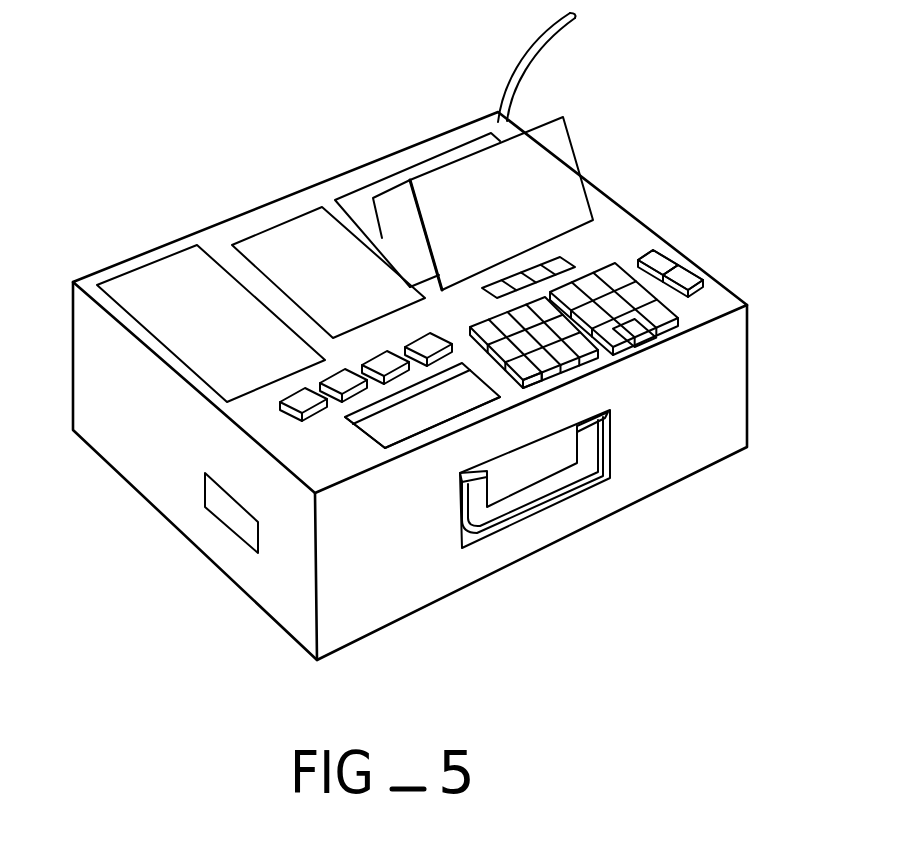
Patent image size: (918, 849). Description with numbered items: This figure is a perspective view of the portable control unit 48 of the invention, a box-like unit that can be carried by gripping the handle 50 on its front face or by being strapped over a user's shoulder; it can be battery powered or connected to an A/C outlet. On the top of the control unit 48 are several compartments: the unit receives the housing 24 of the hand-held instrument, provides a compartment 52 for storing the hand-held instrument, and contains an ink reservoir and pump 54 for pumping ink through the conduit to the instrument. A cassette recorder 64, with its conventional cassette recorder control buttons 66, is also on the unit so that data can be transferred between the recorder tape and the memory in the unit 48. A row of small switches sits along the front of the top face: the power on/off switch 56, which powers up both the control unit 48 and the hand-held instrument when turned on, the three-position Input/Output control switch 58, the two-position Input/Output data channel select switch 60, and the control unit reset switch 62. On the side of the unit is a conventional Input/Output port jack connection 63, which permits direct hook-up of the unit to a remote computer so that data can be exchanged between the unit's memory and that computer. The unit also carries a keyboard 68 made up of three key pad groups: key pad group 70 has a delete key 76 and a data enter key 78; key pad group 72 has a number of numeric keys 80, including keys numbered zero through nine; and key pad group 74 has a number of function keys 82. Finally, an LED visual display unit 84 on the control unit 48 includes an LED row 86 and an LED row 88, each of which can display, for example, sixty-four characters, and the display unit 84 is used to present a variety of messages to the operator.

The housing 24 is at (518, 58).
The portable control unit 48 is at (146, 552).
The handle 50 is at (547, 495).
The compartment 52 is at (178, 295).
The ink reservoir and pump 54 is at (300, 243).
The power on/off switch 56 is at (310, 417).
The Input/Output control switch 58 is at (342, 403).
The Input/Output data channel select switch 60 is at (383, 357).
The control unit reset switch 62 is at (425, 340).
The Input/Output port jack connection 63 is at (259, 538).
The cassette recorder 64 is at (551, 152).
The cassette recorder control buttons 66 is at (586, 245).
The keyboard 68 is at (707, 308).
The key pad group 70 is at (695, 252).
The key pad group 72 is at (655, 342).
The key pad group 74 is at (568, 375).
The delete key 76 is at (657, 260).
The data enter key 78 is at (688, 285).
The numeric keys 80 is at (636, 324).
The function keys 82 is at (535, 385).
The LED visual display unit 84 is at (427, 447).
The LED row 86 is at (362, 420).
The LED row 88 is at (463, 593).